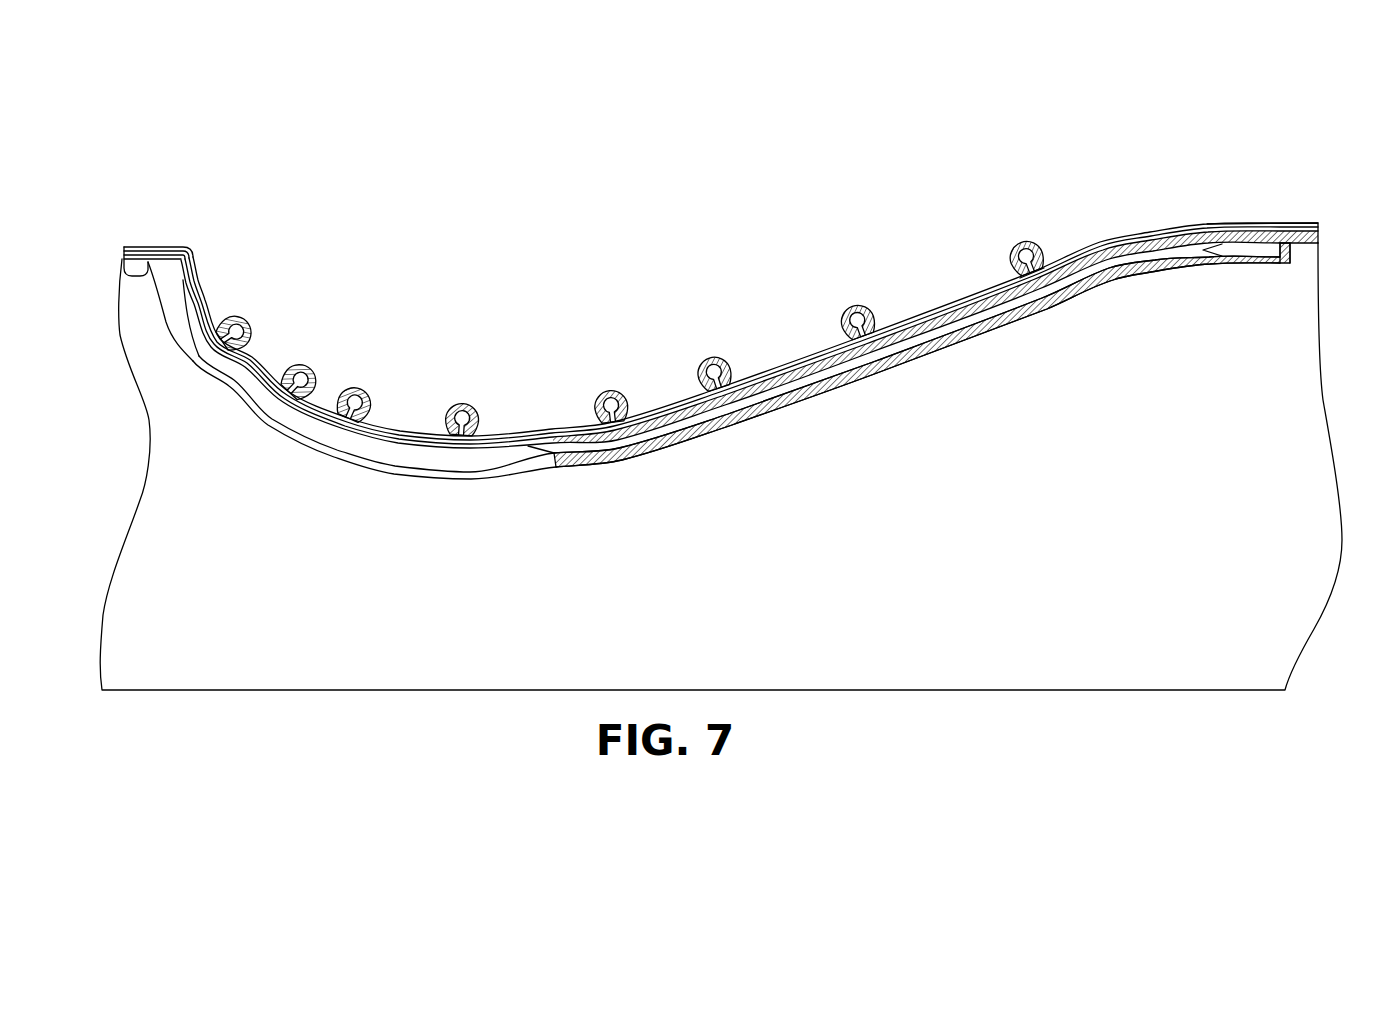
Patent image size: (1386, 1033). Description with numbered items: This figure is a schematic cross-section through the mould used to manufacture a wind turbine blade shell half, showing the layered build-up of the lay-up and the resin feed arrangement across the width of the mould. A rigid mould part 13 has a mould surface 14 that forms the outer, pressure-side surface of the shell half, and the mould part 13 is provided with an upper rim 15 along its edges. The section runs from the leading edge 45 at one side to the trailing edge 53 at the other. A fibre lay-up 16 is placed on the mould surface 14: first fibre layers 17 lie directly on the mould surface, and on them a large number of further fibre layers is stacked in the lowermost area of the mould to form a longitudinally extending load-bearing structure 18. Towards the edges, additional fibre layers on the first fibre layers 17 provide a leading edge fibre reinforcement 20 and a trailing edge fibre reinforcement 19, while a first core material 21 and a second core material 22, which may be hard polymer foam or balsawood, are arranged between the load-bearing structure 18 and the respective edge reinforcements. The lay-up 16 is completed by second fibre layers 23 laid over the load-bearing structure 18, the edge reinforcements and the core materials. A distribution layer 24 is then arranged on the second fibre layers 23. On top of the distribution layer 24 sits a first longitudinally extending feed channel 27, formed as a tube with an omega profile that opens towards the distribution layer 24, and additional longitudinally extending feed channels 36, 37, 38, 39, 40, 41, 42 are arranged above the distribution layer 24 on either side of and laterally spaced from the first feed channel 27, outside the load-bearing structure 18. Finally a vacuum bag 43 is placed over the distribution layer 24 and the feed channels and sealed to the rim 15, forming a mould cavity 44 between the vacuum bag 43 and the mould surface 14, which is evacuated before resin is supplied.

The mould part 13 is at (699, 596).
The mould surface 14 is at (674, 434).
The upper rim 15 is at (126, 246).
The fibre lay-up 16 is at (1107, 239).
The first fibre layers 17 is at (1133, 292).
The load-bearing structure 18 is at (494, 458).
The trailing edge fibre reinforcement 19 is at (1262, 250).
The leading edge fibre reinforcement 20 is at (178, 290).
The first core material 21 is at (230, 372).
The second core material 22 is at (781, 390).
The second fibre layers 23 is at (925, 311).
The distribution layer 24 is at (394, 424).
The first feed channel 27 is at (464, 406).
The additional feed channel 36 is at (237, 313).
The additional feed channel 37 is at (302, 363).
The additional feed channel 38 is at (357, 388).
The additional feed channel 39 is at (608, 392).
The additional feed channel 40 is at (708, 358).
The additional feed channel 41 is at (853, 306).
The additional feed channel 42 is at (1018, 244).
The vacuum bag 43 is at (1281, 223).
The mould cavity 44 is at (1038, 262).
The leading edge 45 is at (146, 247).
The trailing edge 53 is at (1292, 250).